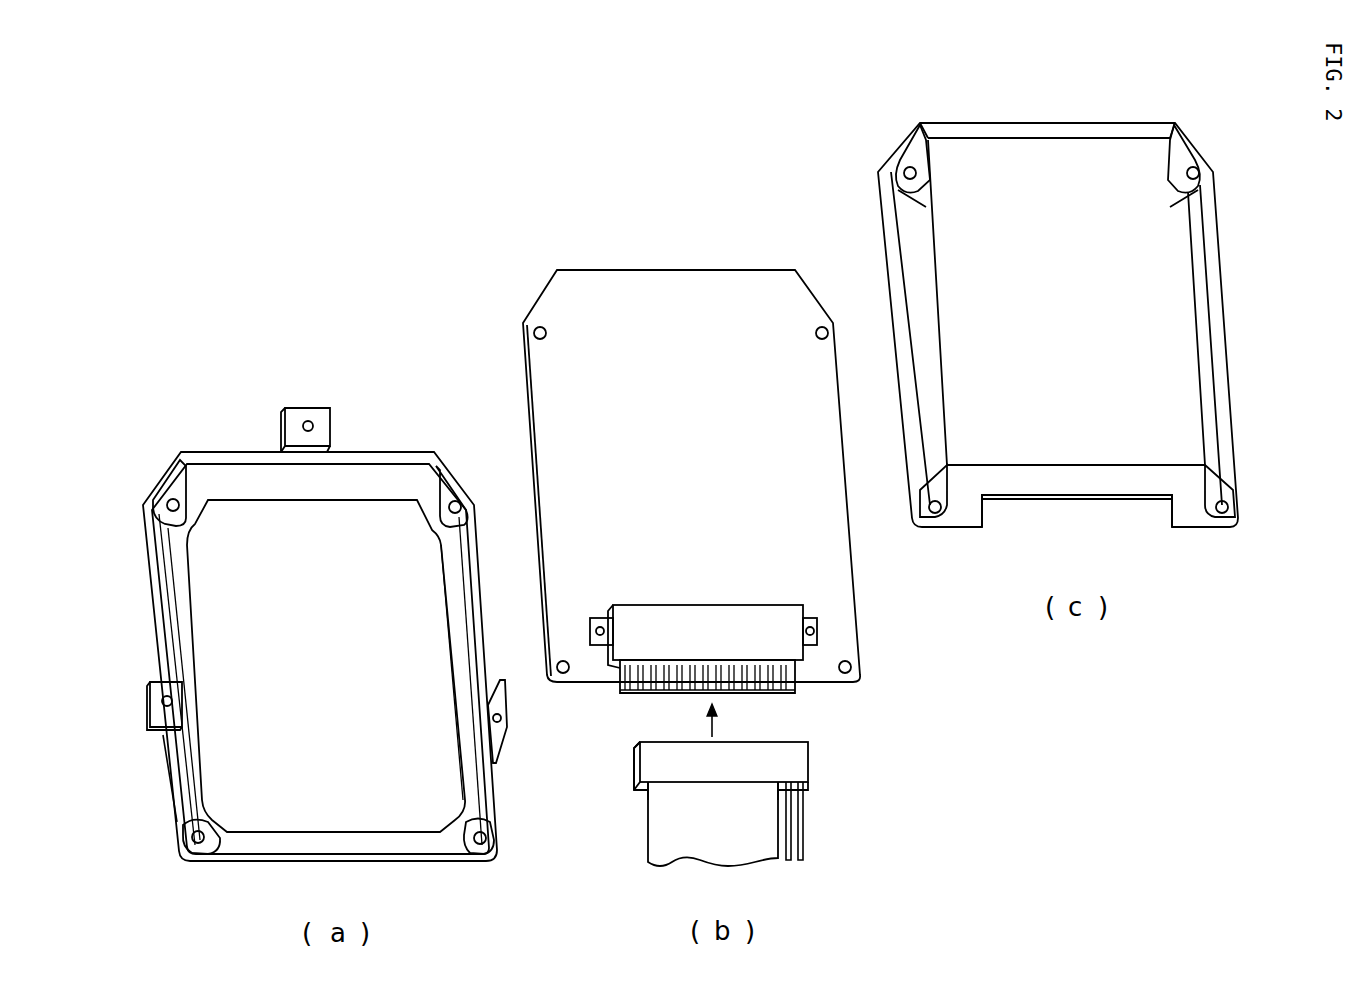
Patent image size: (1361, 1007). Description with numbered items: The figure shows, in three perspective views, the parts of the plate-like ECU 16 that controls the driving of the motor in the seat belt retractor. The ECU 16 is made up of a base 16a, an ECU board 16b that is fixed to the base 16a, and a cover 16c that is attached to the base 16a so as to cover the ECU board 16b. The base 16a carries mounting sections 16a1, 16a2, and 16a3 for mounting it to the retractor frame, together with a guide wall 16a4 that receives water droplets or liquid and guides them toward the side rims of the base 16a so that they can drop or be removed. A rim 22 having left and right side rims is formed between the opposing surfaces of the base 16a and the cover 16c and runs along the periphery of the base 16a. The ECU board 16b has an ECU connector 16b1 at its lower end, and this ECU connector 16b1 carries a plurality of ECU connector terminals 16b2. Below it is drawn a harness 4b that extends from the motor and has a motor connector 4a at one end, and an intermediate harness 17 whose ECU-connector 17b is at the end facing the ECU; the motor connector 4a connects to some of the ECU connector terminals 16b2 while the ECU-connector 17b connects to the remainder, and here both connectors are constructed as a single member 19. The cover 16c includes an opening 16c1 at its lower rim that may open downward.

The ECU 16 is at (450, 241).
The base 16a is at (240, 446).
The mounting section 16a1 is at (298, 422).
The mounting section 16a2 is at (160, 702).
The mounting section 16a3 is at (499, 736).
The guide wall 16a4 is at (533, 690).
The rim 22 is at (172, 787).
The ECU board 16b is at (661, 268).
The ECU connector 16b1 is at (703, 622).
The ECU connector terminals 16b2 is at (780, 708).
The single member 19 is at (636, 758).
The motor connector 4a is at (792, 760).
The harness 4b is at (795, 822).
The intermediate harness 17 is at (683, 822).
The ECU-connector 17b is at (681, 765).
The cover 16c is at (881, 213).
The opening 16c1 is at (985, 503).